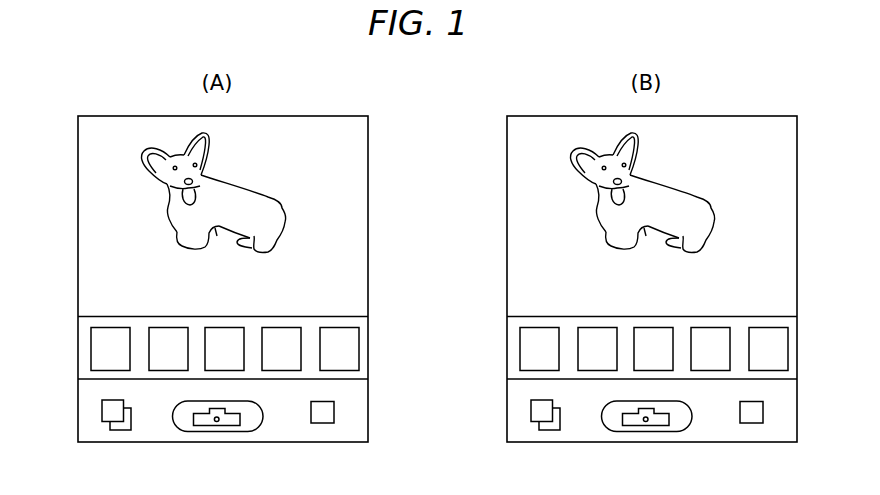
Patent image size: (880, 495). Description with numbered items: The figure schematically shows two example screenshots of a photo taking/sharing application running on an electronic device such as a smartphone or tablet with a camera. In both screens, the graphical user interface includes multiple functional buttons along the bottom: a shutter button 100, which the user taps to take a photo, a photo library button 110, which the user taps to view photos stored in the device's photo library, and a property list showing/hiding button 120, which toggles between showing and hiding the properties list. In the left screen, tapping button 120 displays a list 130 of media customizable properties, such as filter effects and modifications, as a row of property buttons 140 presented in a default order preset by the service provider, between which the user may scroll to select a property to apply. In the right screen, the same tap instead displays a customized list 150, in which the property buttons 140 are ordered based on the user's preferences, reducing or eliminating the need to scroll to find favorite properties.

The shutter button 100 is at (235, 431).
The photo library button 110 is at (125, 430).
The property list showing/hiding button 120 is at (325, 423).
The list of media customizable properties 130 is at (78, 345).
The property buttons 140 is at (338, 328).
The customized list 150 is at (507, 345).